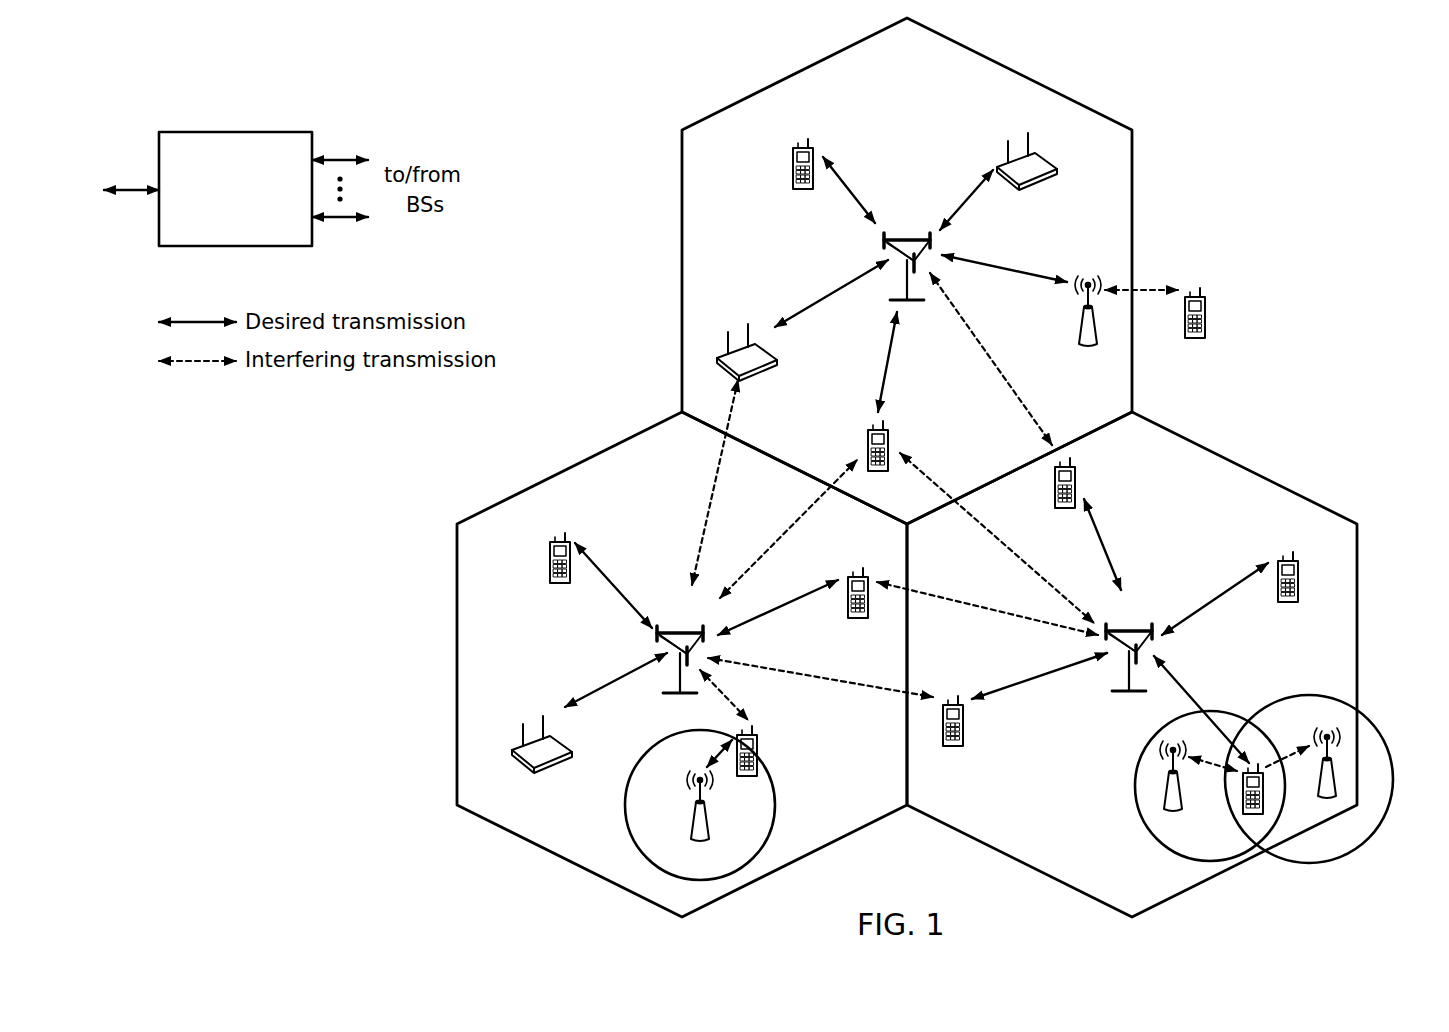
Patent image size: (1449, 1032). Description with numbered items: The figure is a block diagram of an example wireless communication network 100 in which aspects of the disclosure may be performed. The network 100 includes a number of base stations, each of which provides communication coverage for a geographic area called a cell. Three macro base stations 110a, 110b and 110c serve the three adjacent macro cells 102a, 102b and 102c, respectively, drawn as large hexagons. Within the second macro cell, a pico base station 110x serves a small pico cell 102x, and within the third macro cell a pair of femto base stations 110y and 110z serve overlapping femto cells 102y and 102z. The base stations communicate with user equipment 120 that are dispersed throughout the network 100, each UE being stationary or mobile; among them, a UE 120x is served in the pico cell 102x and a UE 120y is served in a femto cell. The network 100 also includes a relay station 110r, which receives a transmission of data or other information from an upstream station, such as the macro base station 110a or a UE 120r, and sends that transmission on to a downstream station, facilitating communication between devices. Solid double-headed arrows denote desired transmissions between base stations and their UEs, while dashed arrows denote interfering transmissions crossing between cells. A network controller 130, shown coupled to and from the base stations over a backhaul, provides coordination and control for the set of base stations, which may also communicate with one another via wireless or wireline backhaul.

The wireless communication network 100 is at (1290, 94).
The macro cell 102a is at (1032, 62).
The macro cell 102b is at (572, 470).
The macro cell 102c is at (1257, 455).
The pico cell 102x is at (648, 748).
The femto cell 102y is at (1137, 750).
The femto cell 102z is at (1317, 676).
The macro base station 110a is at (898, 240).
The macro base station 110b is at (688, 616).
The macro base station 110c is at (1140, 616).
The relay station 110r is at (1080, 328).
The pico base station 110x is at (709, 830).
The femto base station 110y is at (1182, 801).
The femto base station 110z is at (1336, 788).
The user equipment 120 is at (793, 161).
The user equipment 120r is at (1206, 328).
The user equipment 120x is at (772, 740).
The user equipment 120y is at (1241, 806).
The network controller 130 is at (229, 132).